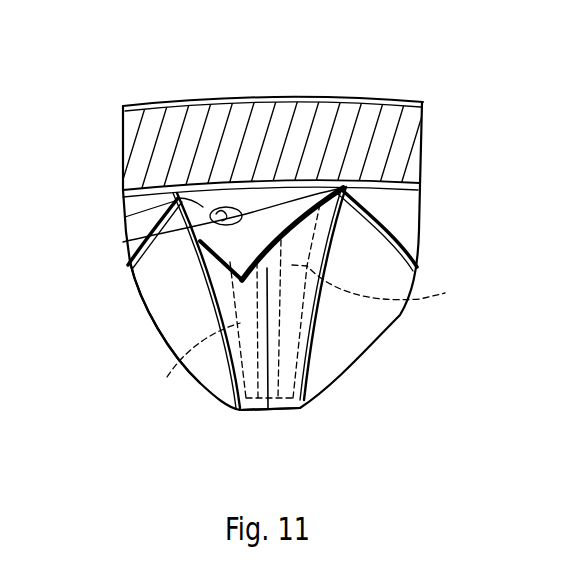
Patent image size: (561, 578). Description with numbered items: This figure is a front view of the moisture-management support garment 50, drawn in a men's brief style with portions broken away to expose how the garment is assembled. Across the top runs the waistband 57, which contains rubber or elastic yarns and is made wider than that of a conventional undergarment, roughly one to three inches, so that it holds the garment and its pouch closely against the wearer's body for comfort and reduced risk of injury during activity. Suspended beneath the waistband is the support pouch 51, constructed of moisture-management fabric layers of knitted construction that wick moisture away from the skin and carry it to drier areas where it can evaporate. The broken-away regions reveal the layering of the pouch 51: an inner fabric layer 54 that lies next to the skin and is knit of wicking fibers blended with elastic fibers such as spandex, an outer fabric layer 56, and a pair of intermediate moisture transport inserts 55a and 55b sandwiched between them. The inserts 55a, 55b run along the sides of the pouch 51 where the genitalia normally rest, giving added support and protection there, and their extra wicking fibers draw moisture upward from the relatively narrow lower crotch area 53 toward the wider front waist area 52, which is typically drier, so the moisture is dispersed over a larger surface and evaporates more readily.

The support garment 50 is at (410, 86).
The support pouch 51 is at (275, 260).
The front waist area 52 is at (305, 169).
The lower crotch area 53 is at (274, 409).
The inner fabric layer 54 is at (125, 217).
The moisture transport insert 55a is at (390, 286).
The moisture transport insert 55b is at (130, 250).
The outer fabric layer 56 is at (237, 252).
The waistband 57 is at (143, 146).